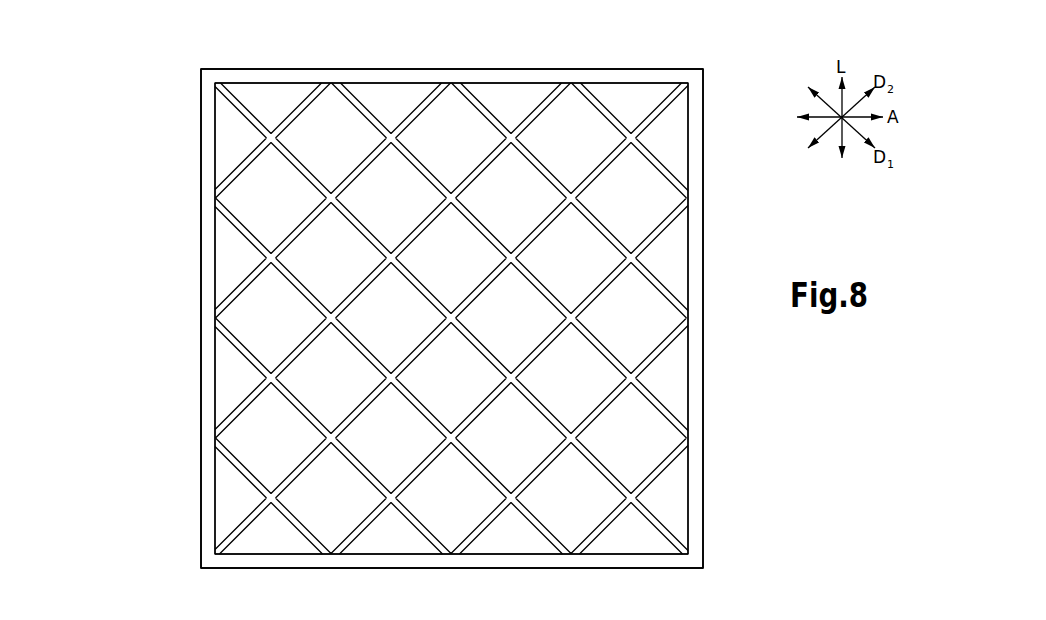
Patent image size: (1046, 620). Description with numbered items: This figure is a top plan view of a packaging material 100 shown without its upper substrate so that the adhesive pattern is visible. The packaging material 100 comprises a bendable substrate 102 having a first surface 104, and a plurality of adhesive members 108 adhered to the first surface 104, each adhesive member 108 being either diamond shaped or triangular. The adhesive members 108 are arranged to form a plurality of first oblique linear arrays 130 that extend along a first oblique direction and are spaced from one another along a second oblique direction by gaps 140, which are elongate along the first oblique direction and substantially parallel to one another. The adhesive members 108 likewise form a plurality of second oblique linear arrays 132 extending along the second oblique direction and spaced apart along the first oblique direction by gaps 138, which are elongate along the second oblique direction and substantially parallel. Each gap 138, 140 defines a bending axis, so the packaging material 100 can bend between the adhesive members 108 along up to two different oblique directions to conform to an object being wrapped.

The packaging material 100 is at (177, 83).
The bendable substrate 102 is at (693, 101).
The first surface 104 is at (695, 135).
The adhesive members 108 is at (280, 187).
The first oblique linear arrays 130 is at (258, 68).
The second oblique linear arrays 132 is at (203, 140).
The gaps 138 is at (692, 78).
The gaps 140 is at (215, 82).